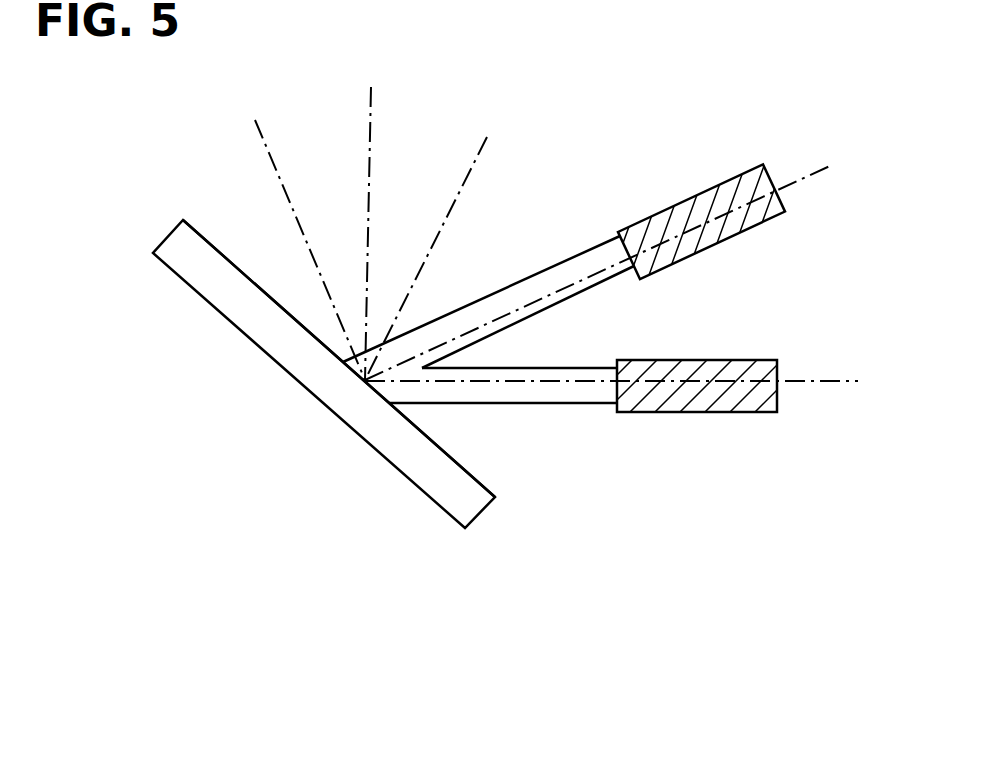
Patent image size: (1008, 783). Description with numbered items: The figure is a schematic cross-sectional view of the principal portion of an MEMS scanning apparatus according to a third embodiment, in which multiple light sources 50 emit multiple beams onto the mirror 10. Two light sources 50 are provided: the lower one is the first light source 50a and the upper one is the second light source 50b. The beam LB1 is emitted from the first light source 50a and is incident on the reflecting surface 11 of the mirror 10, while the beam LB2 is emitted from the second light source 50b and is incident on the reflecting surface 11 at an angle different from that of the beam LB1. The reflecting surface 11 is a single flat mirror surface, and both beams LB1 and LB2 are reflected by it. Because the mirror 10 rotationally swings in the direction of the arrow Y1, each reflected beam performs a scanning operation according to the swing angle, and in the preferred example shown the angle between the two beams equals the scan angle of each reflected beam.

The mirror 10 is at (287, 352).
The reflecting surface 11 is at (232, 262).
The light sources 50 is at (743, 282).
The first light source 50a is at (727, 370).
The second light source 50b is at (747, 224).
The beam LB1 is at (567, 397).
The beam LB2 is at (583, 262).
The arrow Y1 is at (165, 187).